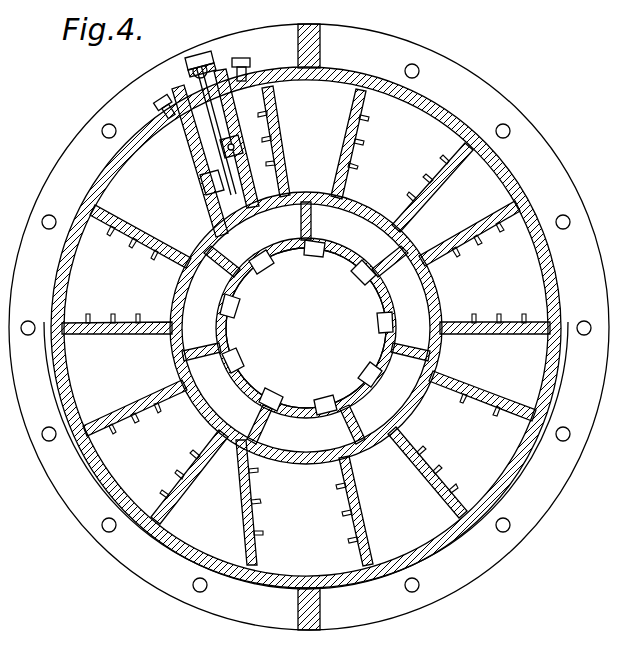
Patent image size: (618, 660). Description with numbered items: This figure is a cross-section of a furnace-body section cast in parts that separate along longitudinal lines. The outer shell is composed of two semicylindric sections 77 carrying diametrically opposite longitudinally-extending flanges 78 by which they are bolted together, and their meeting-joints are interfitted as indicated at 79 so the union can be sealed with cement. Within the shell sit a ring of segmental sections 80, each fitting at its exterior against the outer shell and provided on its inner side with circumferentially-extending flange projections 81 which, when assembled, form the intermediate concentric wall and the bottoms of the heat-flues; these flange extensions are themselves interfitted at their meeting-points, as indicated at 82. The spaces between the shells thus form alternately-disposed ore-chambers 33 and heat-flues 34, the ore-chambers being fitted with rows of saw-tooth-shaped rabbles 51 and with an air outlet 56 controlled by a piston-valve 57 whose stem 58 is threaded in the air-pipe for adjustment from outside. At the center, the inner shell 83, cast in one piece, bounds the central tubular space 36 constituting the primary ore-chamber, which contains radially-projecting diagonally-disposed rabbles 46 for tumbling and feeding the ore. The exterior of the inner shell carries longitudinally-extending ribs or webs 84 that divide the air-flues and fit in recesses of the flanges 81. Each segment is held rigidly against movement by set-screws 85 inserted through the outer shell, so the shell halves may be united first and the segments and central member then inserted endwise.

The ore-chamber 33 is at (209, 171).
The heat-flue 34 is at (300, 98).
The central tubular space 36 is at (306, 328).
The rabbles 46 is at (314, 262).
The rabbles 51 is at (268, 118).
The outlet 56 is at (216, 203).
The piston-valve 57 is at (214, 185).
The stem 58 is at (177, 137).
The semicylindric sections 77 is at (181, 544).
The flanges 78 is at (293, 613).
The interfitted meeting-joints 79 is at (318, 565).
The segmental section 80 is at (352, 118).
The flange projections 81 is at (322, 185).
The interfitted meeting-points 82 is at (414, 260).
The inner shell 83 is at (383, 294).
The ribs or webs 84 is at (312, 222).
The set-screws 85 is at (244, 64).